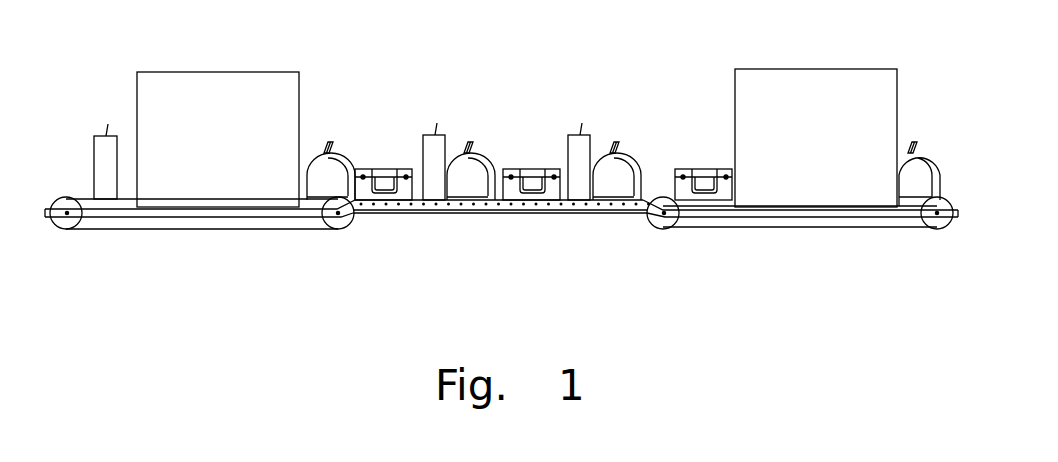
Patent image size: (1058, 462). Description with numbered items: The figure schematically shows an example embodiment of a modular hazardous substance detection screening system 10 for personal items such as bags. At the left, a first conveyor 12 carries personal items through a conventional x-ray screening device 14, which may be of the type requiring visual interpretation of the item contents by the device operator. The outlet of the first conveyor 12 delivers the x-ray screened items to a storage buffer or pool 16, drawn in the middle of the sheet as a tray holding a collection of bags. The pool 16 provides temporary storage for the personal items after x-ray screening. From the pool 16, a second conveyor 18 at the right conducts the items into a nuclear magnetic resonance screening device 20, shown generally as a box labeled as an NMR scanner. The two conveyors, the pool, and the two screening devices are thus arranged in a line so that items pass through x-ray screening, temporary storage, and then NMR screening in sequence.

The screening system 10 is at (404, 304).
The first conveyor 12 is at (283, 223).
The x-ray screening device 14 is at (278, 122).
The pool 16 is at (730, 122).
The second conveyor 18 is at (720, 223).
The nuclear magnetic resonance (NMR) screening device 20 is at (878, 120).